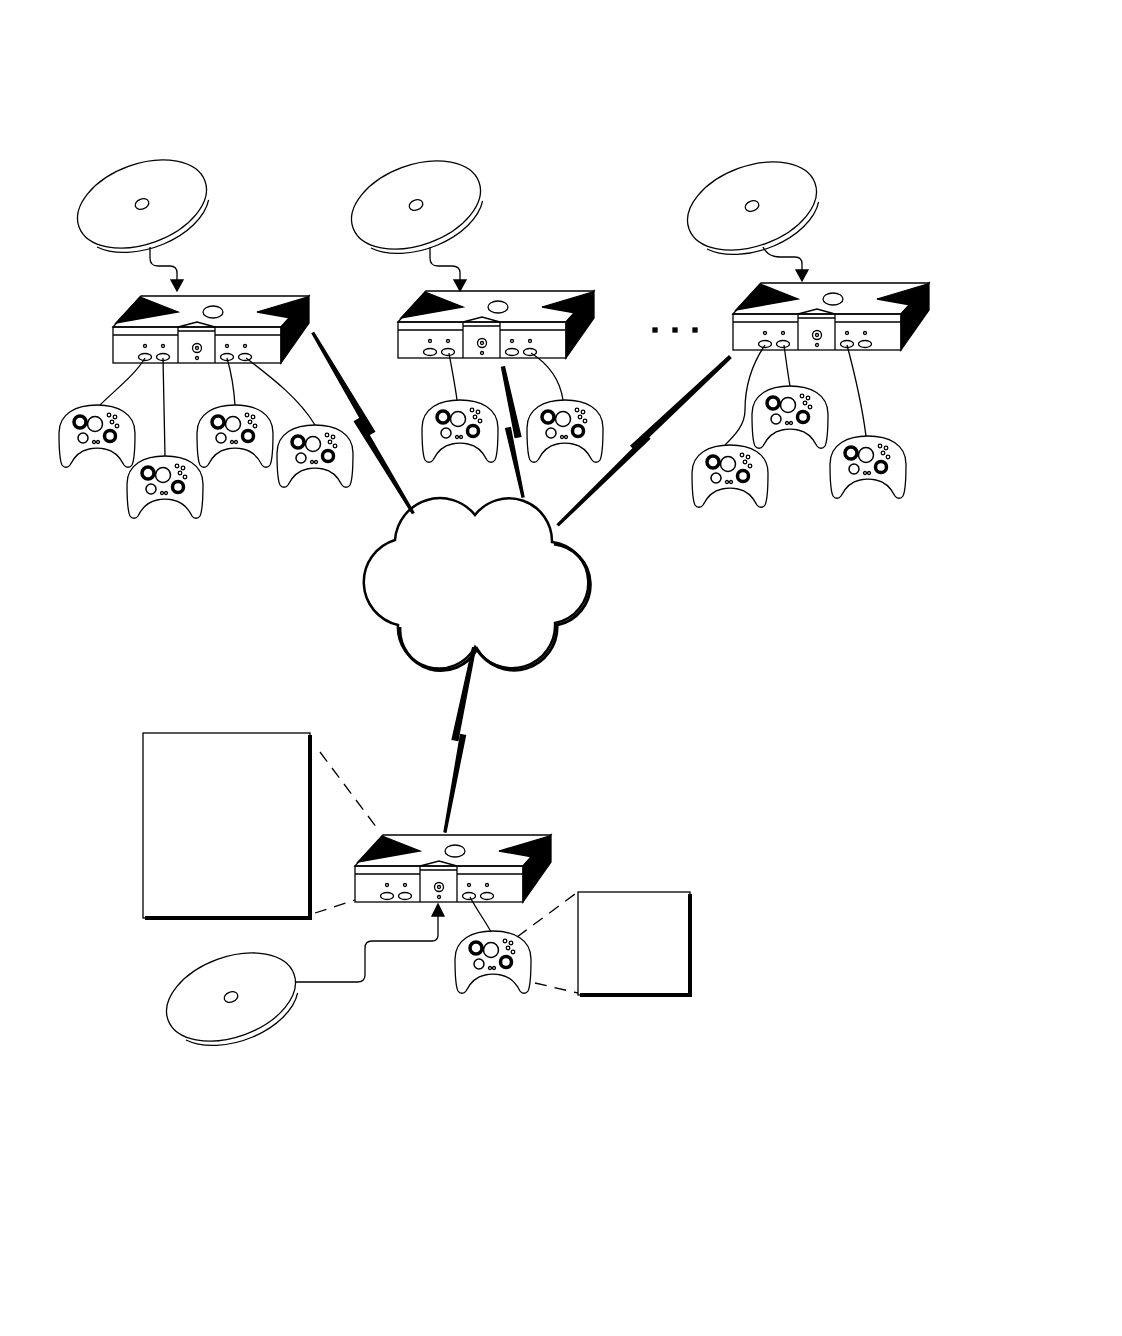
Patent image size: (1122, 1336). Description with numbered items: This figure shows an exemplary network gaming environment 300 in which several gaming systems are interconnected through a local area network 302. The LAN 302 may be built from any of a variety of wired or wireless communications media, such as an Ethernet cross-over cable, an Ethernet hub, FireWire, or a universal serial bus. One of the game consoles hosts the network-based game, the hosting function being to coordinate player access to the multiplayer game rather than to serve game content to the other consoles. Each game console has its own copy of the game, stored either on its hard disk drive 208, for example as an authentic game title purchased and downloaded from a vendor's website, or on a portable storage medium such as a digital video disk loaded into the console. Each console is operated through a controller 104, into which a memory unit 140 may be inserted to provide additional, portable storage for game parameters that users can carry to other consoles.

The network gaming environment 300 is at (706, 61).
The local area network 302 is at (363, 580).
The controller 104 is at (458, 985).
The memory unit 140 is at (637, 890).
The hard disk drive 208 is at (228, 732).